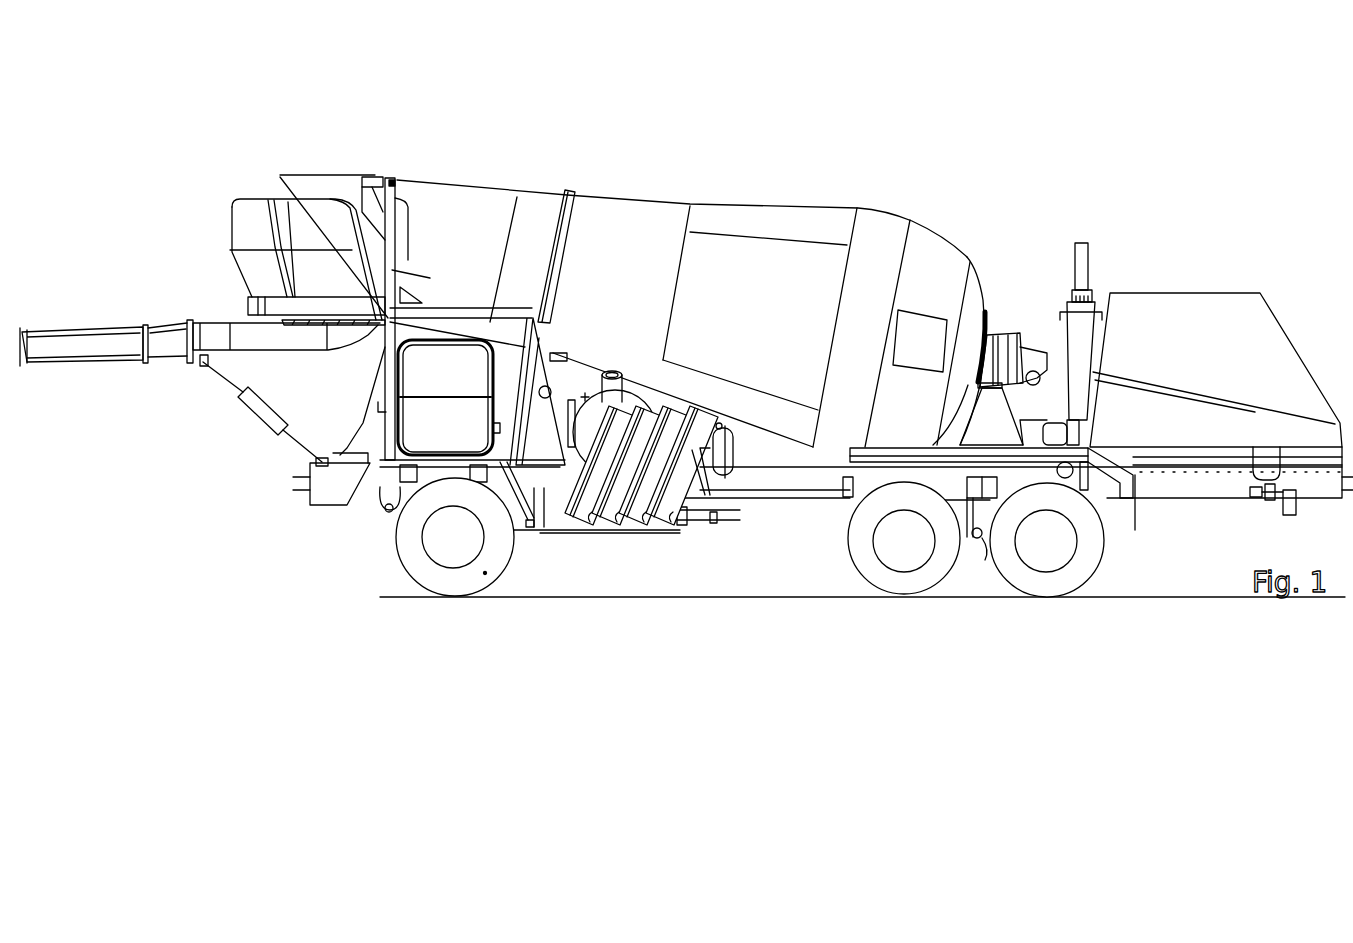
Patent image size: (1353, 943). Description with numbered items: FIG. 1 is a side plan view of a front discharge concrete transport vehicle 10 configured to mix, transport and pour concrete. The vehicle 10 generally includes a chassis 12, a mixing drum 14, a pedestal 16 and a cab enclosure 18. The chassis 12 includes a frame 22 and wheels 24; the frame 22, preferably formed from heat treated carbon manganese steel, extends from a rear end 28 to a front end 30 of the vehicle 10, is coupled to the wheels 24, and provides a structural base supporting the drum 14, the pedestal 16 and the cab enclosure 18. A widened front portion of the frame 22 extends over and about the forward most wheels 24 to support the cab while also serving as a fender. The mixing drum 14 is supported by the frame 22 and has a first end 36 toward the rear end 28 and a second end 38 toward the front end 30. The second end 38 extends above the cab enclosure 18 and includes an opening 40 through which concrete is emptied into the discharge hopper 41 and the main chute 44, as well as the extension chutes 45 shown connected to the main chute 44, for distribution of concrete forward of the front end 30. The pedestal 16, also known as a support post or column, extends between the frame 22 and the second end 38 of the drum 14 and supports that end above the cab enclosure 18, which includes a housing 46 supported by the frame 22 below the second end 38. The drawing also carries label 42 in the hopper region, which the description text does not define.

The front discharge concrete transport vehicle 10 is at (915, 105).
The chassis 12 is at (806, 506).
The mixing drum 14 is at (632, 217).
The pedestal 16 is at (557, 355).
The cab enclosure 18 is at (336, 428).
The frame 22 is at (770, 485).
The wheels 24 is at (422, 567).
The rear end 28 is at (1299, 516).
The front end 30 is at (357, 526).
The first end 36 is at (1003, 248).
The second end 38 is at (441, 157).
The opening 40 is at (350, 155).
The discharge hopper 41 is at (316, 277).
The discharge hopper 42 is at (305, 175).
The main chute 44 is at (293, 338).
The extension chutes 45 is at (62, 348).
The housing 46 is at (505, 373).